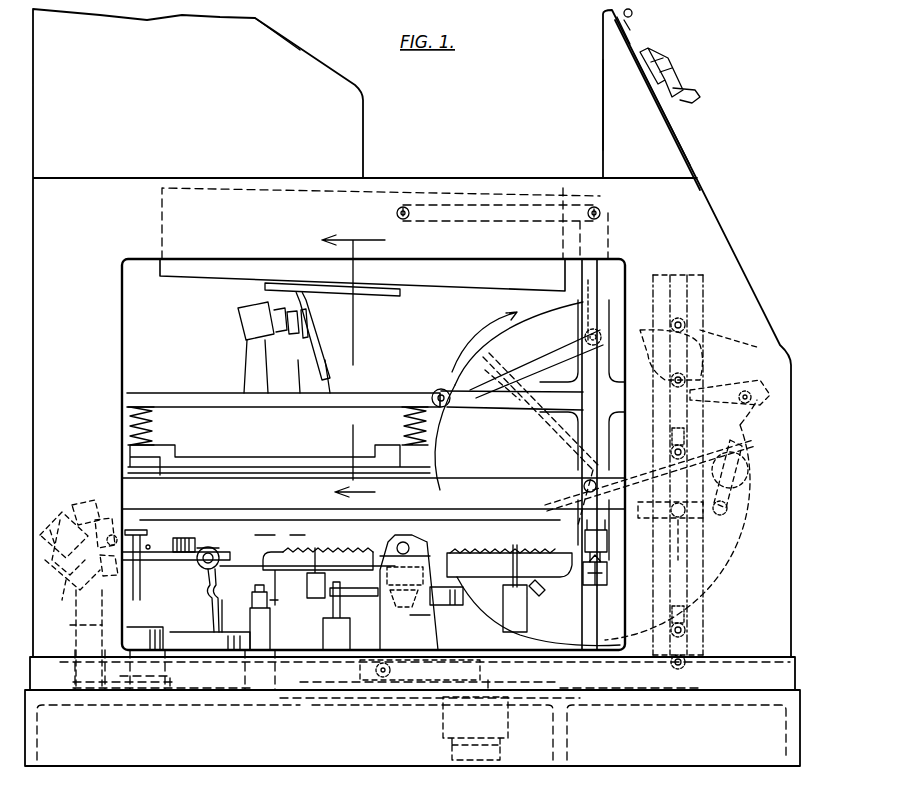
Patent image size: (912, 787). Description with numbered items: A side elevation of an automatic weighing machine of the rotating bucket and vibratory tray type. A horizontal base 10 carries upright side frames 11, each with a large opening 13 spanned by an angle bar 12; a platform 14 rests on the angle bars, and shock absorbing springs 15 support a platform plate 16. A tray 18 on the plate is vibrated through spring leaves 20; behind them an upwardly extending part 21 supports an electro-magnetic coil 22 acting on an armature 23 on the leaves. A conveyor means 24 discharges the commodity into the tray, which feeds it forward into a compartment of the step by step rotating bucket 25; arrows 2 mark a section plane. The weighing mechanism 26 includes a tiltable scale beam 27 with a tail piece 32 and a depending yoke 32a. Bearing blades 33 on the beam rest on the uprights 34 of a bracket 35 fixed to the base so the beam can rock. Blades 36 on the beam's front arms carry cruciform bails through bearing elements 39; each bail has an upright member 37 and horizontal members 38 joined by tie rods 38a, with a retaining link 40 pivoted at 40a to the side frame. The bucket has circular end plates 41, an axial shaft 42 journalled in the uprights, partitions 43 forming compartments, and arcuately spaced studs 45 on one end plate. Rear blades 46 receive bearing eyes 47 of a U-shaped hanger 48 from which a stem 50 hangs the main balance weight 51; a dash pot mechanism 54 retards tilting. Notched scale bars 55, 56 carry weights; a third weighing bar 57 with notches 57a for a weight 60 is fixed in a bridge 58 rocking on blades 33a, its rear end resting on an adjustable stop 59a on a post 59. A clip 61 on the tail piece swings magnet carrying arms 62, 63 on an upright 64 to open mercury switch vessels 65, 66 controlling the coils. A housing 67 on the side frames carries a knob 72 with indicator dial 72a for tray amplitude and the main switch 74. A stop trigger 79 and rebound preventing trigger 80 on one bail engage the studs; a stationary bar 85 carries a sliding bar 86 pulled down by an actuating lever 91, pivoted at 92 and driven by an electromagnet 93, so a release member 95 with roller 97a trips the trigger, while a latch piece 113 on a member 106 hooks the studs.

The horizontal base 10 is at (353, 771).
The upright side frame 11 is at (488, 178).
The angle bar 12 is at (284, 478).
The opening 13 is at (142, 320).
The platform 14 is at (238, 462).
The shock and vibration absorbing springs 15 is at (154, 425).
The platform plate 16 is at (192, 397).
The tray 18 is at (208, 279).
The spring leaves 20 is at (320, 352).
The upwardly extending part 21 is at (244, 361).
The electro-magnetic coil 22 is at (240, 326).
The armature 23 is at (296, 342).
The conveyor means 24 is at (302, 36).
The step by step rotating bucket 25 is at (538, 324).
The weighing mechanism 26 is at (270, 524).
The scale beam 27 is at (303, 521).
The section line 2 is at (353, 362).
The tail piece 32 is at (182, 547).
The yoke 32a is at (288, 556).
The bearing blades 33 is at (402, 542).
The blade 33a is at (416, 620).
The upright 34 is at (438, 633).
The bracket 35 is at (744, 390).
The blade 36 is at (594, 590).
The upright member 37 is at (607, 268).
The horizontal members 38 is at (512, 414).
The tie rods 38a is at (438, 392).
The bearing element 39 is at (608, 557).
The retaining link 40 is at (542, 224).
The pivotal attachment 40a is at (405, 205).
The circular end plates 41 is at (457, 437).
The shaft 42 is at (583, 487).
The partitions 43 is at (545, 440).
The studs 45 is at (727, 492).
The blades 46 is at (198, 564).
The bearing eyes 47 is at (220, 555).
The U-shaped hanger 48 is at (224, 600).
The stem 50 is at (214, 628).
The main balance weight 51 is at (200, 632).
The dash pot mechanism 54 is at (162, 626).
The scale bar 55 is at (470, 560).
The scale bar 56 is at (350, 550).
The third weighing bar 57 is at (438, 590).
The notches 57a is at (354, 582).
The transverse bridge 58 is at (403, 600).
The post 59 is at (264, 641).
The adjustable stop 59a is at (272, 612).
The weight 60 is at (340, 652).
The clip 61 is at (126, 512).
The magnet carrying arm 62 is at (102, 512).
The magnet carrying arm 63 is at (75, 590).
The upright 64 is at (72, 633).
The mercury containing vessel 65 is at (69, 555).
The mercury containing vessel 66 is at (80, 507).
The housing 67 is at (596, 102).
The knob 72 is at (670, 64).
The indicator dial 72a is at (688, 135).
The main switch 74 is at (632, 14).
The trippable stop trigger 79 is at (552, 362).
The rebound preventing trigger 80 is at (502, 374).
The assembly and supporting bar 85 is at (705, 320).
The upright bar 86 is at (690, 587).
The actuating lever 91 is at (622, 690).
The pivot 92 is at (380, 680).
The solenoid or electromagnet 93 is at (442, 736).
The trip or release member 95 is at (706, 362).
The roller 97a is at (685, 308).
The member 106 is at (711, 525).
The bell crank shaped latch piece 113 is at (770, 350).